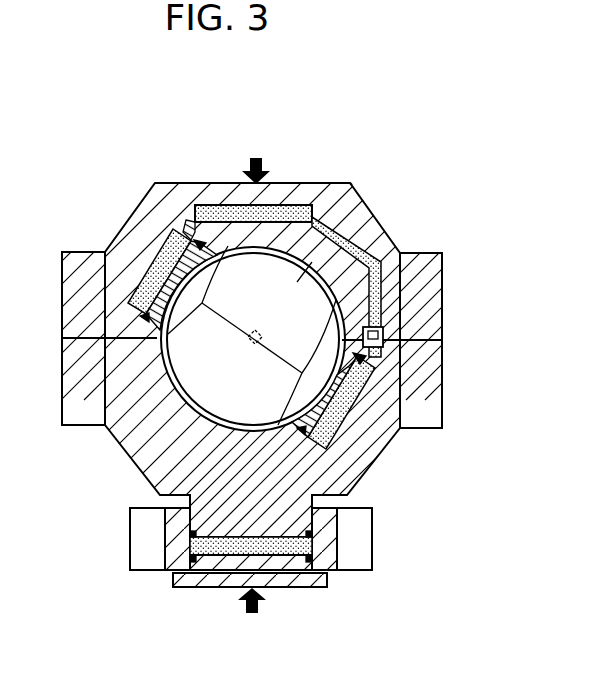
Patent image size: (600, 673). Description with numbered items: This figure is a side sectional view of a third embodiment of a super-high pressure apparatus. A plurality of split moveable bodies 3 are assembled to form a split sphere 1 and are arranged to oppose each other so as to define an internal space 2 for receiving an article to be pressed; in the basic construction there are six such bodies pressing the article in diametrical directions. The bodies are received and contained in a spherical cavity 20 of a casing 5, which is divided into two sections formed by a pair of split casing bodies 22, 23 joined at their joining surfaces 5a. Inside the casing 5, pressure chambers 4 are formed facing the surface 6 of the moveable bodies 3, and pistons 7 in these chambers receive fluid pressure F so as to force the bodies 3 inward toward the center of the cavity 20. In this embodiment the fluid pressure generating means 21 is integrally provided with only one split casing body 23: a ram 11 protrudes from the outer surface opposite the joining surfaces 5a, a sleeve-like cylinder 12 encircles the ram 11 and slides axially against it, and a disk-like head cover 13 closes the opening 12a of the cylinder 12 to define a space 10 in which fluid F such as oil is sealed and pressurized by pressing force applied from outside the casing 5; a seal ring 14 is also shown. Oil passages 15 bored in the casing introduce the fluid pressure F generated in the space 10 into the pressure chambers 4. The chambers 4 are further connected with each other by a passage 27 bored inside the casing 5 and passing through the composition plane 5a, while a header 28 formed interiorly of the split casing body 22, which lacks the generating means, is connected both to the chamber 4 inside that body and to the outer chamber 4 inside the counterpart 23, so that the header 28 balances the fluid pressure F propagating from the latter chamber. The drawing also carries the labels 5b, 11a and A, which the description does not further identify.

The split sphere 1 is at (130, 447).
The internal space 2 is at (252, 347).
The split moveable bodies 3 is at (333, 290).
The pressure chambers 4 is at (150, 283).
The casing 5 is at (300, 312).
The joining surfaces 5a is at (442, 340).
The housing shoulder 5b is at (350, 183).
The surface 6 is at (222, 247).
The pistons 7 is at (148, 312).
The fluid pressure forming spaces 10 is at (212, 562).
The rams 11 is at (333, 530).
The lower block contact face 11a is at (277, 587).
The sleeve-like cylinders 12 is at (165, 565).
The openings 12a is at (312, 580).
The head covers 13 is at (226, 552).
The seal ring 14 is at (330, 577).
The oil passages 15 is at (347, 495).
The cavity 20 is at (155, 478).
The fluid pressure generating means 21 is at (263, 580).
The split casing body 22 is at (370, 210).
The split casing body 23 is at (383, 452).
The passage 27 is at (442, 285).
The header 28 is at (306, 183).
The adjusting screw A is at (385, 365).
The fluid pressure F is at (160, 253).